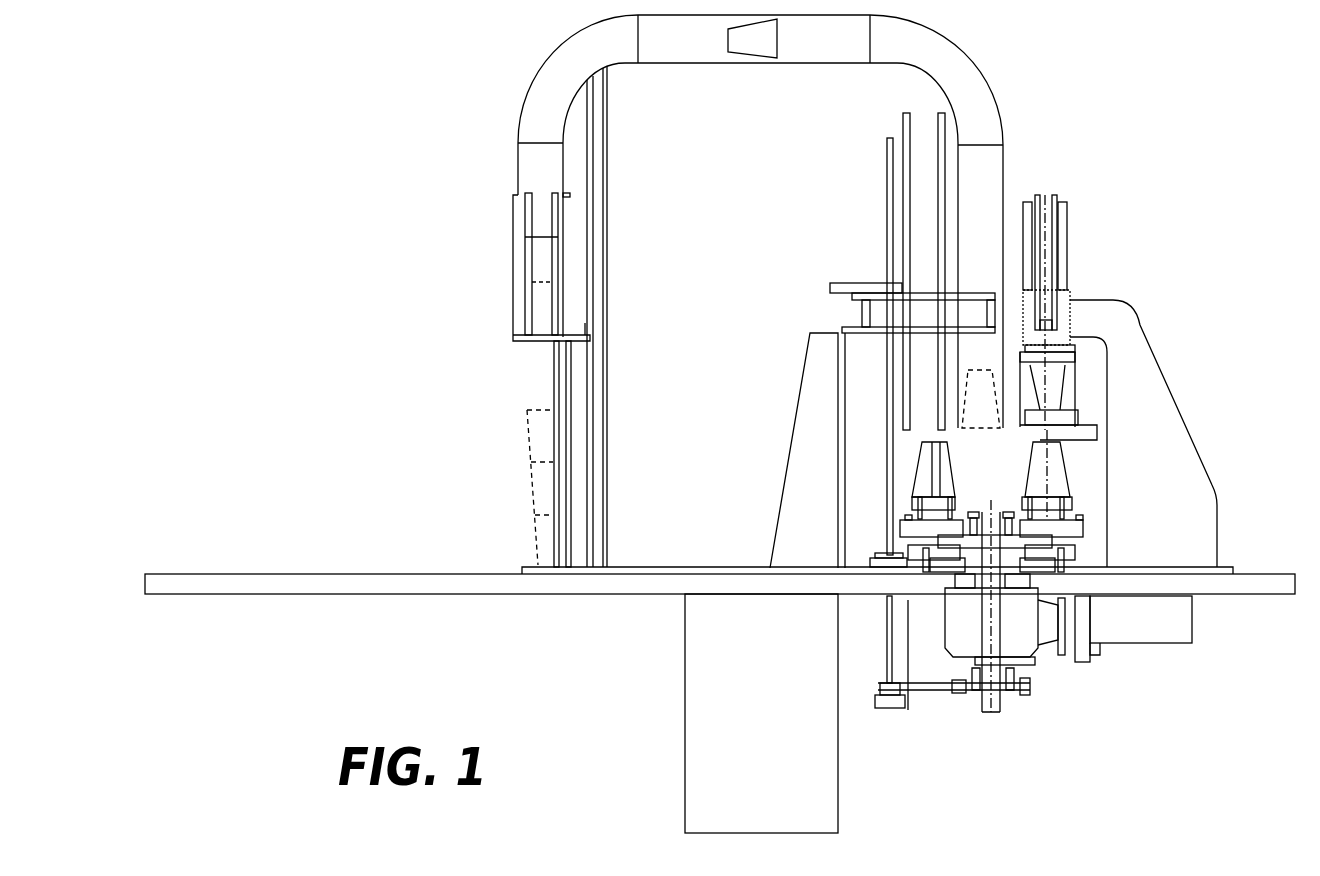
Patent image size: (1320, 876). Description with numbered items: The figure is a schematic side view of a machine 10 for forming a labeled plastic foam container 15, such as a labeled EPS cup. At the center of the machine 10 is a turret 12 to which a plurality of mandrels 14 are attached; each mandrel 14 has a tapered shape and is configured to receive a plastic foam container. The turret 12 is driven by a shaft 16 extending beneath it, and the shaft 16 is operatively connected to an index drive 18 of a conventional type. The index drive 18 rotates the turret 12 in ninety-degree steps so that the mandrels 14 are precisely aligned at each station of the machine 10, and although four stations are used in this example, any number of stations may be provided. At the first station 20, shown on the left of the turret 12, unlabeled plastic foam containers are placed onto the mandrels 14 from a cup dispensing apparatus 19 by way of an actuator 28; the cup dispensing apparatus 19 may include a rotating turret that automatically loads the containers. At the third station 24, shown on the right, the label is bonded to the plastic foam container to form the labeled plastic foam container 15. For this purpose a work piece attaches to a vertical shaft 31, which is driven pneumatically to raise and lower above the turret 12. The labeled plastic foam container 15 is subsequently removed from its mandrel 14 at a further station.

The machine 10 is at (386, 142).
The turret 12 is at (1083, 532).
The mandrel 14 is at (1055, 452).
The labeled plastic foam container 15 is at (546, 552).
The shaft 16 is at (1000, 702).
The index drive 18 is at (1152, 627).
The cup dispensing apparatus 19 is at (886, 283).
The first station 20 is at (917, 471).
The third station 24 is at (1070, 350).
The actuator 28 is at (902, 378).
The vertical shaft 31 is at (1067, 280).